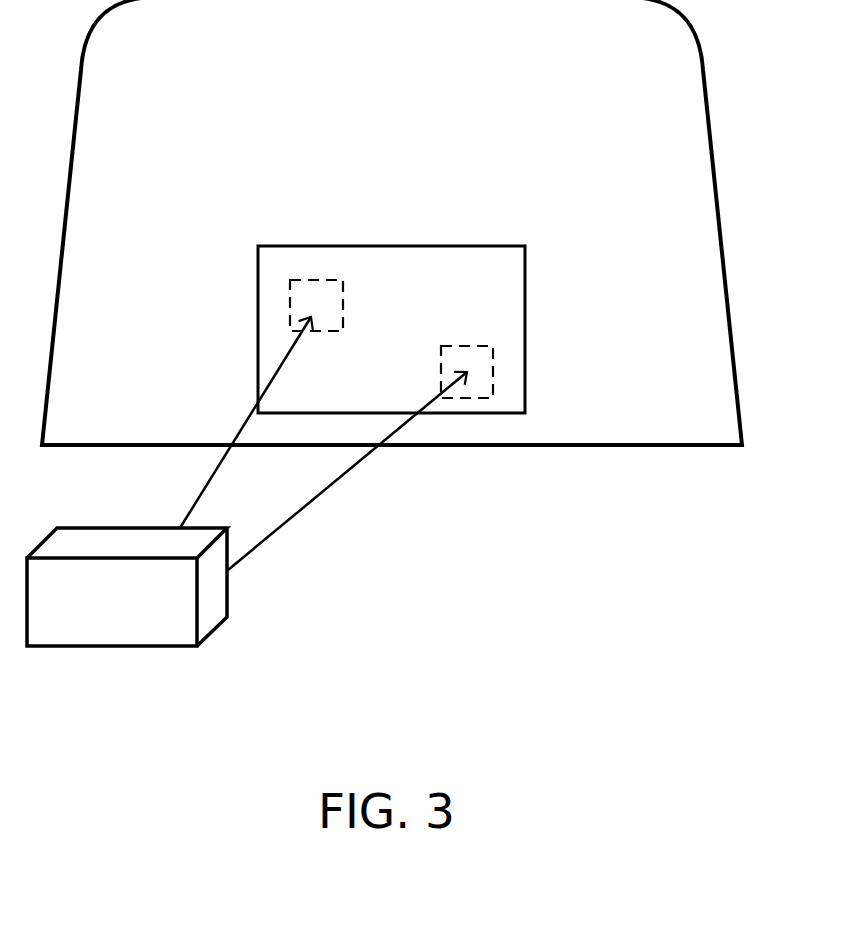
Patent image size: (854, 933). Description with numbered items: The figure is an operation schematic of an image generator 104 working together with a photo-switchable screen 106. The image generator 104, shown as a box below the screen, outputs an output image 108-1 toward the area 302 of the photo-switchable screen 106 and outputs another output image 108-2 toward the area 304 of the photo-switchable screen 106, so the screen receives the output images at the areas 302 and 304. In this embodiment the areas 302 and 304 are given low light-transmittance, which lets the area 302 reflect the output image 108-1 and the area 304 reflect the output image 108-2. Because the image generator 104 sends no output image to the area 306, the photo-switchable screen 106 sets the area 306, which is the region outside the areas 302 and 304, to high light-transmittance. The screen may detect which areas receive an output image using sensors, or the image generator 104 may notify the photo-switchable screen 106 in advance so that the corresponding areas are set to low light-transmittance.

The image generator 104 is at (113, 647).
The photo-switchable screen 106 is at (390, 246).
The output image 108-1 is at (202, 488).
The output image 108-2 is at (303, 510).
The area 302 is at (315, 280).
The area 304 is at (493, 370).
The area 306 is at (453, 305).